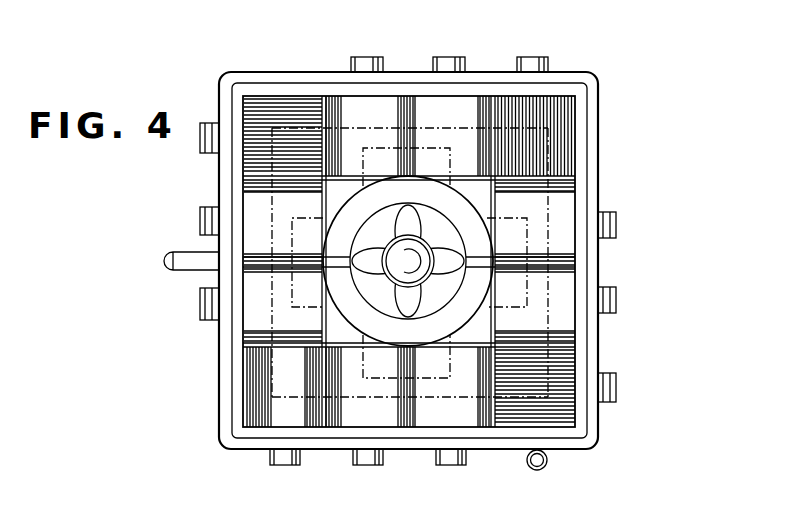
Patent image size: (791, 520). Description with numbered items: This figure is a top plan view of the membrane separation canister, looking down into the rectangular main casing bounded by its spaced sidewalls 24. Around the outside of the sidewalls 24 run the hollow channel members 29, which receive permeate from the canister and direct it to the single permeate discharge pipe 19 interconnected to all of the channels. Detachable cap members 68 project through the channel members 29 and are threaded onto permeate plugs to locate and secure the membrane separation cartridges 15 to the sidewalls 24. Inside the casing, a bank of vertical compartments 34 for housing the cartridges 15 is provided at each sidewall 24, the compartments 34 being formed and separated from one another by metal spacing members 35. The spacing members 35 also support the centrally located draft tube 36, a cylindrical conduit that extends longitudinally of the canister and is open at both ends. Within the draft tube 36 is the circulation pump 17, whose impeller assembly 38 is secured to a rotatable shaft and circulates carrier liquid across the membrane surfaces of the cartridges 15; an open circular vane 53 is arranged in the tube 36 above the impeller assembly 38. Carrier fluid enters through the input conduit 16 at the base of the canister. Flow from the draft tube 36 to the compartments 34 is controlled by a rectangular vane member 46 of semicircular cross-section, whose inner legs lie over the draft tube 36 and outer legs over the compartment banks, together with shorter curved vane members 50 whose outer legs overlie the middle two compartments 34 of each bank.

The membrane separation cartridge 15 is at (263, 113).
The input conduit 16 is at (175, 263).
The circulation pump 17 is at (422, 279).
The permeate discharge pipe 19 is at (543, 469).
The sidewall 24 is at (585, 350).
The hollow channel member 29 is at (593, 99).
The vertical compartment 34 is at (424, 105).
The spacing member 35 is at (316, 113).
The draft tube 36 is at (500, 289).
The impeller assembly 38 is at (360, 253).
The vane member 46 is at (547, 236).
The curved vane member 50 is at (527, 292).
The open circular vane 53 is at (383, 290).
The detachable cap member 68 is at (524, 60).